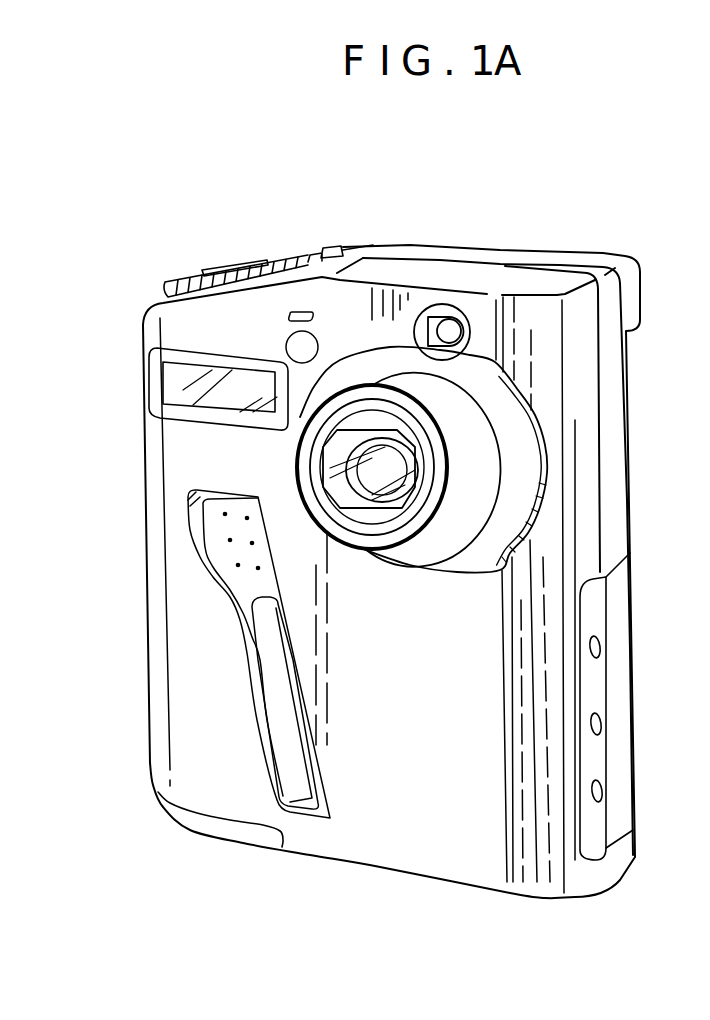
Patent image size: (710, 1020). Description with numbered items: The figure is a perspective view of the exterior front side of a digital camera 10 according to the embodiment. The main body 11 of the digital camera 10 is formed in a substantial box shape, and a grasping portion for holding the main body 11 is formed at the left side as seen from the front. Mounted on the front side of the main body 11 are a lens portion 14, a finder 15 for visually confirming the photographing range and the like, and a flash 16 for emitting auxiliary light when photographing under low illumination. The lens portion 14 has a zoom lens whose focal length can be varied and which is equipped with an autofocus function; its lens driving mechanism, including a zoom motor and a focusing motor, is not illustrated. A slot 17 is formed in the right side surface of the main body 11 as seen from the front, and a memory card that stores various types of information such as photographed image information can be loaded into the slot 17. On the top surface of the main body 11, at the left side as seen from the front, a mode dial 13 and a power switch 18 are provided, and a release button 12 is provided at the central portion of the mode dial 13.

The digital camera 10 is at (499, 190).
The main body 11 is at (395, 855).
The release button 12 is at (226, 262).
The mode dial 13 is at (186, 280).
The lens portion 14 is at (451, 485).
The finder 15 is at (446, 318).
The flash 16 is at (141, 380).
The slot 17 is at (617, 727).
The power switch 18 is at (338, 247).